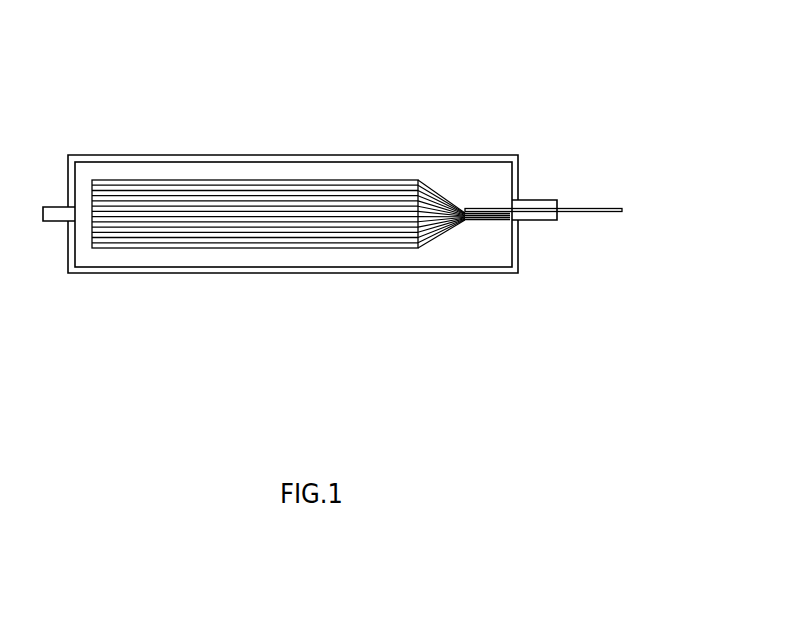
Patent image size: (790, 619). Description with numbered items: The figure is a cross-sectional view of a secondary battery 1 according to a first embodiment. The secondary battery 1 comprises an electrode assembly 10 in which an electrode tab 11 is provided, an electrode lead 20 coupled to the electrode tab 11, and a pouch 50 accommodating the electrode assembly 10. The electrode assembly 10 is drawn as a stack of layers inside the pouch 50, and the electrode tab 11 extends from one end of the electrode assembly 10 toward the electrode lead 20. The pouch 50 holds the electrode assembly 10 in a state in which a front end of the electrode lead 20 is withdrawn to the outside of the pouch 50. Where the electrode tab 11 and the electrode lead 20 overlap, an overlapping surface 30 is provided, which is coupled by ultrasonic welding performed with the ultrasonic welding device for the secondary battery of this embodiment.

The secondary battery 1 is at (526, 96).
The electrode assembly 10 is at (277, 192).
The electrode tab 11 is at (441, 197).
The electrode lead 20 is at (592, 207).
The overlapping surface 30 is at (490, 223).
The pouch 50 is at (337, 274).